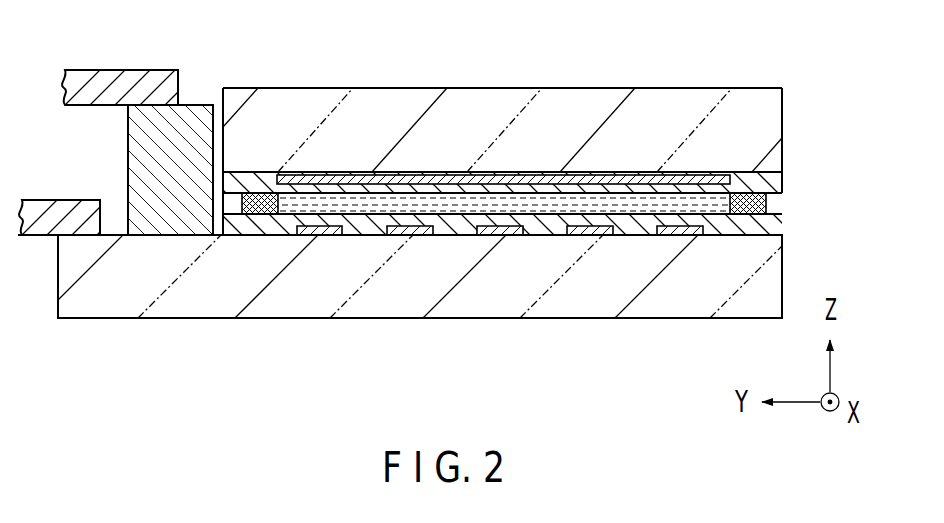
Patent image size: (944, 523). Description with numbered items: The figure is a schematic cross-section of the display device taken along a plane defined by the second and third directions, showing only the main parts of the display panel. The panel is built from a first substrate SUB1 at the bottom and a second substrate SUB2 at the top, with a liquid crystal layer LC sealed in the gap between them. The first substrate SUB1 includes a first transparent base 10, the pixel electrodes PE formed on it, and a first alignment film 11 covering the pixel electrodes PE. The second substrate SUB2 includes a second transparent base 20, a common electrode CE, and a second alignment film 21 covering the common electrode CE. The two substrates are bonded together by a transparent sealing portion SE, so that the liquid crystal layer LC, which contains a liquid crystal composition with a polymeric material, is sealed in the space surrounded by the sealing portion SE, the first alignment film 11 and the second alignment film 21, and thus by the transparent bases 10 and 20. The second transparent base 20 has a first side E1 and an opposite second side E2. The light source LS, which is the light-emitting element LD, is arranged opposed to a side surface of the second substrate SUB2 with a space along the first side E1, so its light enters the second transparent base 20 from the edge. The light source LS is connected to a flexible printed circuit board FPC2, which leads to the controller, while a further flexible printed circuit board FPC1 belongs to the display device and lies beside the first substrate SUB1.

The first transparent base 10 is at (380, 320).
The first substrate SUB1 is at (450, 314).
The first alignment film 11 is at (637, 226).
The pixel electrodes PE is at (323, 233).
The liquid crystal layer LC is at (540, 206).
The sealing portion SE is at (768, 204).
The common electrode CE is at (446, 175).
The second alignment film 21 is at (679, 178).
The second transparent base 20 is at (375, 87).
The second substrate SUB2 is at (536, 117).
The first side E1 is at (212, 88).
The second side E2 is at (794, 99).
The light source LS is at (166, 170).
The light-emitting element LD is at (132, 132).
The flexible printed circuit board FPC1 is at (53, 200).
The flexible printed circuit board FPC2 is at (89, 70).